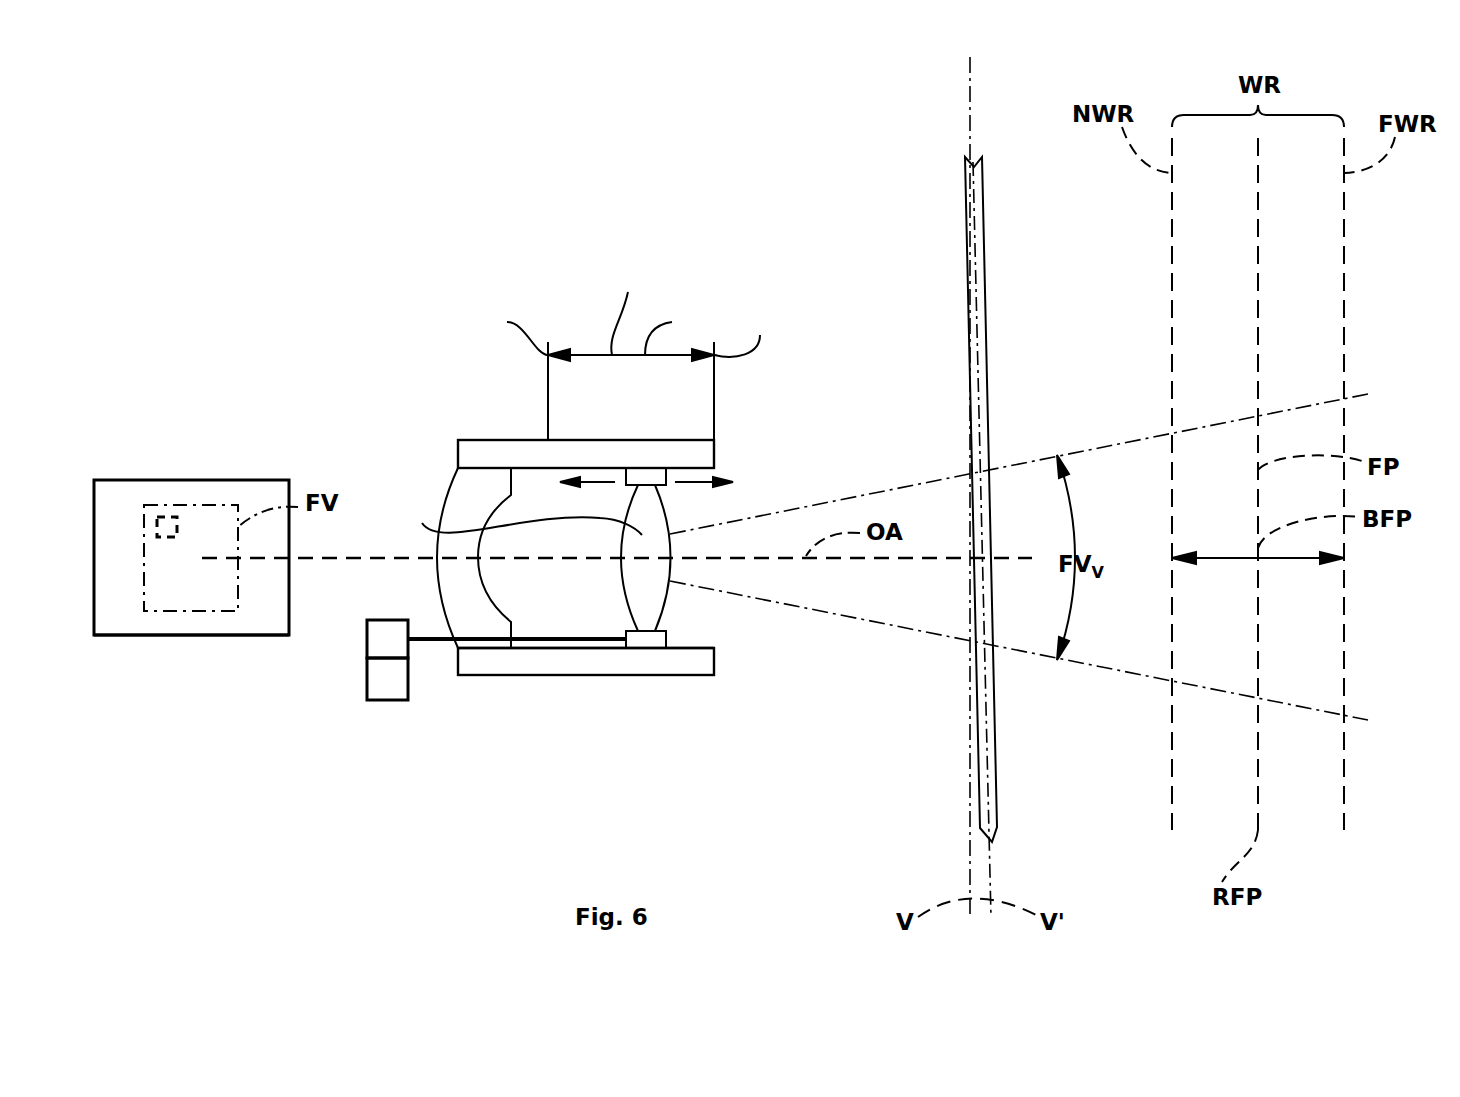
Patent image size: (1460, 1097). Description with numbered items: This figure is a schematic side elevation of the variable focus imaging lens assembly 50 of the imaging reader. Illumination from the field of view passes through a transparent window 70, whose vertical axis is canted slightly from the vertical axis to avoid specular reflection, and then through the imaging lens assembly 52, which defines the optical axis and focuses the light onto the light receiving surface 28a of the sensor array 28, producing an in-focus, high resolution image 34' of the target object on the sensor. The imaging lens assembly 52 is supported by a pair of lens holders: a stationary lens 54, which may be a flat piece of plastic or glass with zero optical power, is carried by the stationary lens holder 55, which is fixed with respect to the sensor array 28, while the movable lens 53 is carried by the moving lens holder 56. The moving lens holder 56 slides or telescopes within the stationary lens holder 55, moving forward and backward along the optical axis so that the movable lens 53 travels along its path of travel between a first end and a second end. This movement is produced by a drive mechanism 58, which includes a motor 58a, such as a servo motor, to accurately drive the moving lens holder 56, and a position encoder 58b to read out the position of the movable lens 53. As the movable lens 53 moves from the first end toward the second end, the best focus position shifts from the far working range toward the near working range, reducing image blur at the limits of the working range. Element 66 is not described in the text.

The sensor array 28 is at (240, 468).
The light receiving surface 28a is at (145, 625).
The image of the target object 34' is at (167, 488).
The variable focus imaging lens assembly 50 is at (515, 262).
The imaging lens assembly 52 is at (490, 405).
The movable lens 53 is at (517, 525).
The stationary lens 54 is at (468, 497).
The stationary lens holder 55 is at (505, 663).
The moving lens holder 56 is at (637, 640).
The drive mechanism 58 is at (469, 687).
The motor 58a is at (367, 640).
The position encoder 58b is at (410, 683).
The mirror axis 66 is at (983, 353).
The transparent window 70 is at (985, 292).